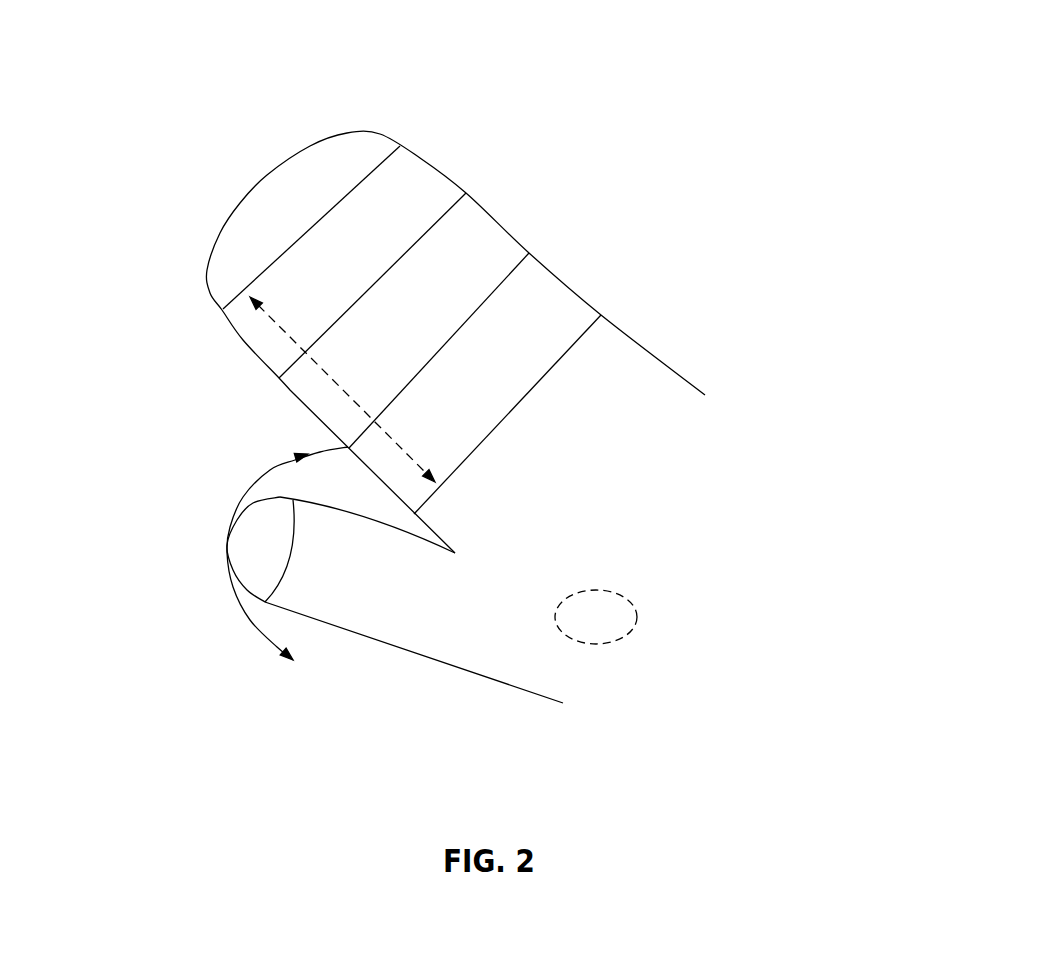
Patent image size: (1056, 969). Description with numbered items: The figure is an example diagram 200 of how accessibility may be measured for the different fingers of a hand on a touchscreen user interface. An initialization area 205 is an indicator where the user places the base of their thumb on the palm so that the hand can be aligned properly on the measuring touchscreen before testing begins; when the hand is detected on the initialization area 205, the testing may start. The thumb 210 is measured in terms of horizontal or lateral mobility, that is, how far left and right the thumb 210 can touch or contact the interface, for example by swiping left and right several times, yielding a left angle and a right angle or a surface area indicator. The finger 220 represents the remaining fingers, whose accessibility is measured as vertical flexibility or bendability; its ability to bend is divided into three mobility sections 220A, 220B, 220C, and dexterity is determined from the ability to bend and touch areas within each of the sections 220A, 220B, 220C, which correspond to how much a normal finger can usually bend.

The example diagram 200 is at (1003, 43).
The initialization area 205 is at (596, 617).
The thumb 210 is at (395, 600).
The finger 220 is at (293, 153).
The first mobility section 220A is at (372, 285).
The second mobility section 220B is at (439, 350).
The third mobility section 220C is at (507, 414).